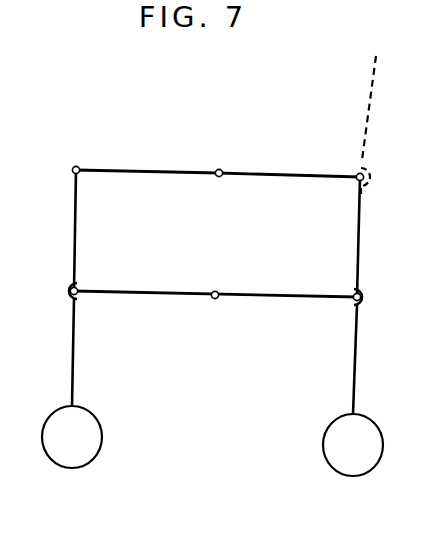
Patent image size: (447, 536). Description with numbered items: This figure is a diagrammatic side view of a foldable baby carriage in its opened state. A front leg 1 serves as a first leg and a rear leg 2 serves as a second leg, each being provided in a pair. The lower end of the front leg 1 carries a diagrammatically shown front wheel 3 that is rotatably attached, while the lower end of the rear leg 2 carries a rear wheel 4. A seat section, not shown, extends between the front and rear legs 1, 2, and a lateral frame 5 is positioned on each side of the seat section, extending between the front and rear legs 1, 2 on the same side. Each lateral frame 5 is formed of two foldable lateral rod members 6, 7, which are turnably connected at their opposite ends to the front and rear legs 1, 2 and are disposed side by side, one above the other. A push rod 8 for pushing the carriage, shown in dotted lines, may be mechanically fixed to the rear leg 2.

The front leg 1 is at (73, 318).
The rear leg 2 is at (359, 334).
The front wheel 3 is at (98, 420).
The rear wheel 4 is at (330, 424).
The lateral frame 5 is at (263, 171).
The lateral rod member 6 is at (156, 171).
The lateral rod member 7 is at (172, 295).
The push rod 8 is at (380, 52).